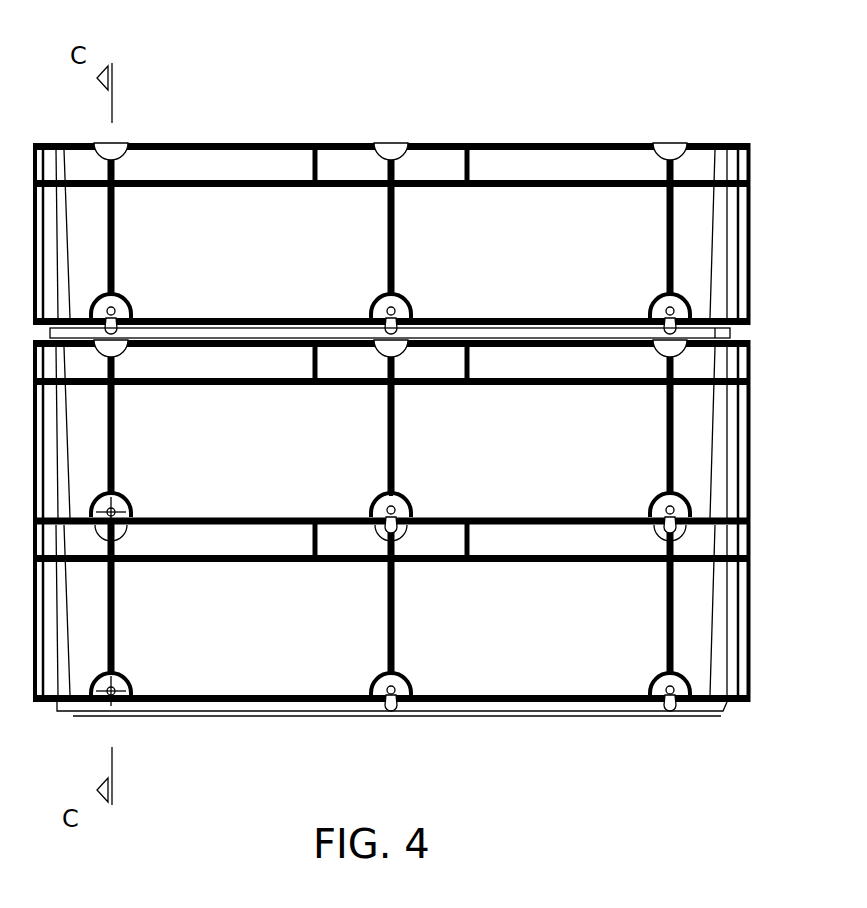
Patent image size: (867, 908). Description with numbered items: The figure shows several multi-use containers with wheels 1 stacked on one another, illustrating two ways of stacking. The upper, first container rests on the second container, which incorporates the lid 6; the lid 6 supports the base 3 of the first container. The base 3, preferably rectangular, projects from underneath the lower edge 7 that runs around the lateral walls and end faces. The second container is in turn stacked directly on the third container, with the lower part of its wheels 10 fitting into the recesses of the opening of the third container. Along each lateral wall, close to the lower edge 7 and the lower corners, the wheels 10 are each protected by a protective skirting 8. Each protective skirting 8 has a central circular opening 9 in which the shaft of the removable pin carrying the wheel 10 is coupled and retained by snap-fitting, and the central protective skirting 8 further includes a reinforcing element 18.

The multi-use container with wheels 1 is at (352, 590).
The base 3 is at (330, 705).
The lid 6 is at (587, 333).
The lower edge 7 is at (253, 697).
The protective skirting 8 is at (402, 686).
The central circular opening 9 is at (389, 690).
The wheel 10 is at (397, 700).
The reinforcing element 18 is at (393, 652).